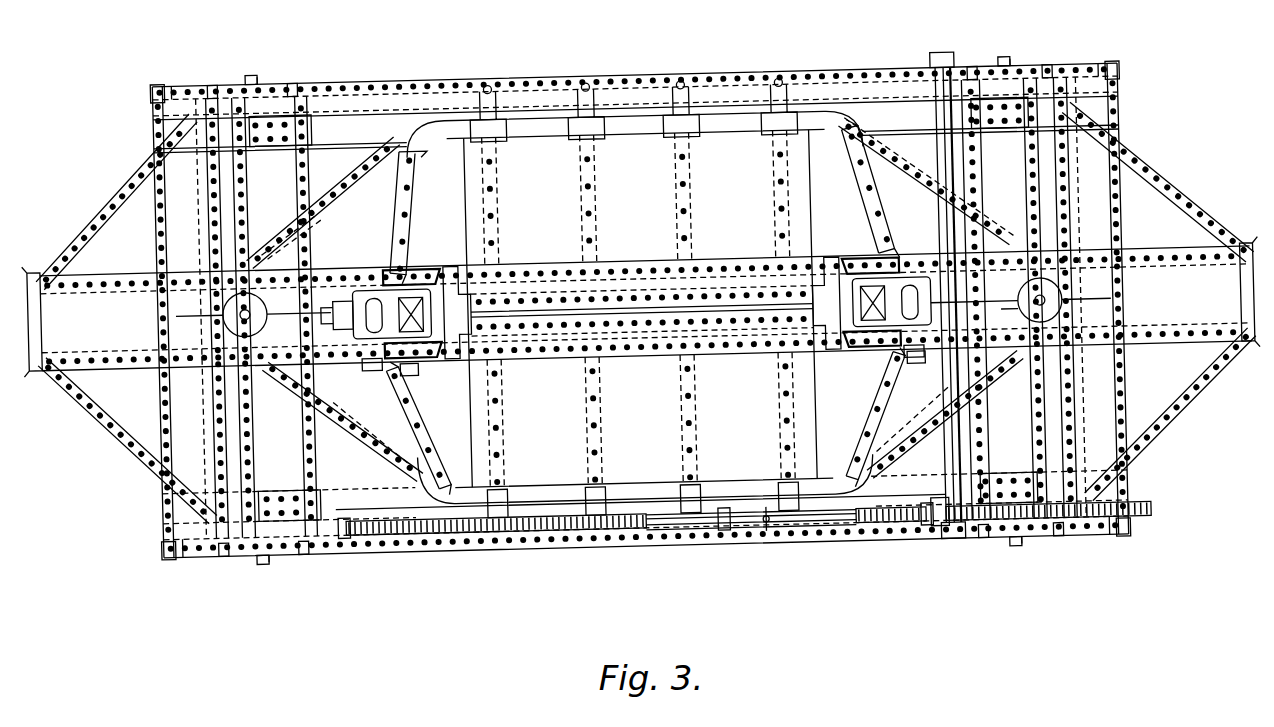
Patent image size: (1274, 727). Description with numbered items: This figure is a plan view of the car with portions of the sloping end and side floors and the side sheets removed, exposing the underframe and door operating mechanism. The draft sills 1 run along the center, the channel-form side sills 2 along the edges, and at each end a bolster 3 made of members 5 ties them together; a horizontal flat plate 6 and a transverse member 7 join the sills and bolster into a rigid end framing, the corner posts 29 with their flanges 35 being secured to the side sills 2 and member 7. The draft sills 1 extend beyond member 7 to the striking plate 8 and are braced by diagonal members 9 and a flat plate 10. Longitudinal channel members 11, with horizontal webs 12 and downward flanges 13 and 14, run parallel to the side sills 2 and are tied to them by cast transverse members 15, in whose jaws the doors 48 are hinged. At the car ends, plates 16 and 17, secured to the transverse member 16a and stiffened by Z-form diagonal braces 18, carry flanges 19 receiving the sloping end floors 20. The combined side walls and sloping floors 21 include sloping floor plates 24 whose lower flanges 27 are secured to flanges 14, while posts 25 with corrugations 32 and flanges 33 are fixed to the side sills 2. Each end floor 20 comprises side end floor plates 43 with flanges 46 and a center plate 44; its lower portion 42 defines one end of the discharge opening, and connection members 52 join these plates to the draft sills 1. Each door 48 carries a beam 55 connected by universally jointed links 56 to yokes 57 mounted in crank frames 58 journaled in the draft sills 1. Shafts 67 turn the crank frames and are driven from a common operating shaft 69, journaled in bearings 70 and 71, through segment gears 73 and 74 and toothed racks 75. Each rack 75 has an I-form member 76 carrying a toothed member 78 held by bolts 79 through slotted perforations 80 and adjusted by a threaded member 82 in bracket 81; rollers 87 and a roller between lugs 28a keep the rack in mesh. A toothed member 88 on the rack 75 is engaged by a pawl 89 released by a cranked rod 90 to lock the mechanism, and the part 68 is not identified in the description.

The draft sill 1 is at (130, 279).
The side sill 2 is at (615, 75).
The bolster 3 is at (249, 184).
The bolster member 5 is at (210, 165).
The horizontal plate 6 is at (593, 309).
The transverse member 7 is at (1122, 115).
The striking plate 8 is at (40, 291).
The diagonal member 9 is at (125, 182).
The flat plate member 10 is at (110, 338).
The longitudinally extending member 11 is at (648, 104).
The web 12 is at (800, 104).
The flange 13 is at (350, 118).
The flange 14 is at (371, 143).
The transversely extending member 15 is at (585, 88).
The plate 16 is at (452, 134).
The transverse member 16a is at (300, 222).
The plate 17 is at (940, 440).
The diagonal brace member 18 is at (380, 165).
The flange 19 is at (390, 220).
The sloping end floor 20 is at (644, 308).
The combined side wall and sloping floor 21 is at (627, 134).
The sloping floor plate 24 is at (745, 134).
The post 25 is at (254, 66).
The lower flange 27 is at (527, 134).
The lug 28a is at (760, 536).
The corner post 29 is at (158, 73).
The corrugation 32 is at (264, 68).
The flange 33 is at (218, 75).
The flange 35 is at (176, 75).
The lower portion of sloping end floor 42 is at (470, 245).
The side end floor plate 43 is at (644, 310).
The center end floor plate 44 is at (472, 290).
The flange 46 is at (445, 116).
The discharge door 48 is at (642, 318).
The connection member 52 is at (420, 290).
The beam 55 is at (735, 262).
The universally jointed link 56 is at (368, 364).
The yoke 57 is at (266, 306).
The crank frame 58 is at (342, 294).
The shaft 67 is at (370, 402).
The lug 68 is at (410, 370).
The operating shaft 69 is at (945, 190).
The bearing 70 is at (932, 534).
The bearing 71 is at (938, 80).
The segment gear 73 is at (855, 530).
The segment gear 74 is at (338, 532).
The toothed rack 75 is at (655, 522).
The rack member 76 is at (690, 531).
The toothed member 78 is at (470, 529).
The bolt 79 is at (345, 505).
The slotted perforation 80 is at (395, 529).
The bracket 81 is at (770, 495).
The threaded member 82 is at (672, 495).
The roller 87 is at (712, 508).
The toothed member 88 is at (1120, 514).
The pawl 89 is at (948, 548).
The rod 90 is at (947, 60).